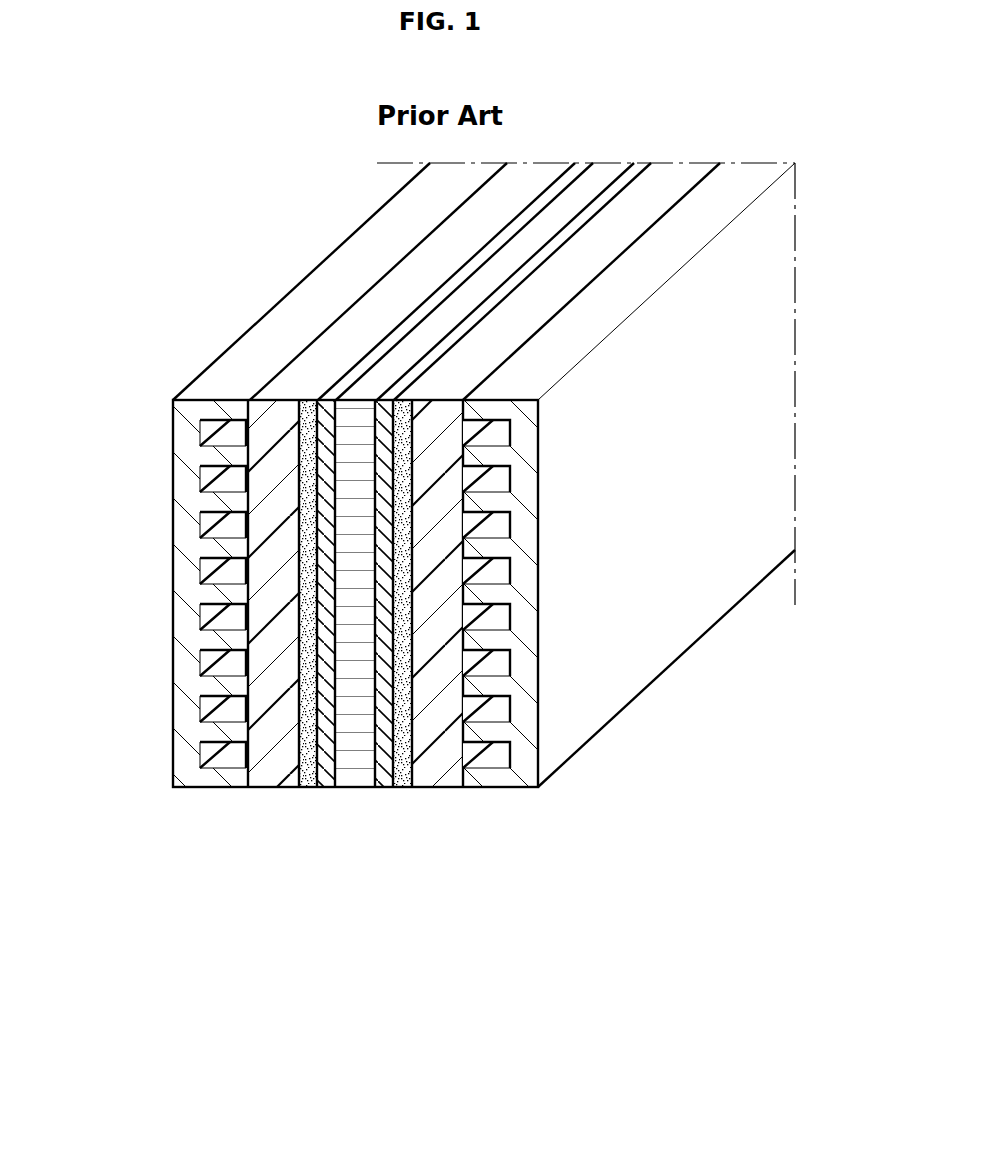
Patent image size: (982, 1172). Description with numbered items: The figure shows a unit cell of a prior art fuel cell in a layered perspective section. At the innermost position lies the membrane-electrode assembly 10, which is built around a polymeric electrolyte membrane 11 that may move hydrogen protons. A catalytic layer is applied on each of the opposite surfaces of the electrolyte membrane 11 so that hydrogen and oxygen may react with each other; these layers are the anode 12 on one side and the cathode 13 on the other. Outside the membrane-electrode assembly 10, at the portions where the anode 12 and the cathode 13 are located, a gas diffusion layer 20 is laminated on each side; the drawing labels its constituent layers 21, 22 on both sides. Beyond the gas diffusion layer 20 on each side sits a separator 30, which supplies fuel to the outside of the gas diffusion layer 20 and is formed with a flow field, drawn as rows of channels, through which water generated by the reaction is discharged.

The membrane-electrode assembly 10 is at (352, 720).
The polymeric electrolyte membrane 11 is at (361, 775).
The anode 12 is at (333, 775).
The cathode 13 is at (385, 773).
The gas diffusion layer 20 is at (358, 683).
The separator plate 21 is at (272, 765).
The gas diffusion layer 22 is at (305, 770).
The separator 30 is at (190, 673).